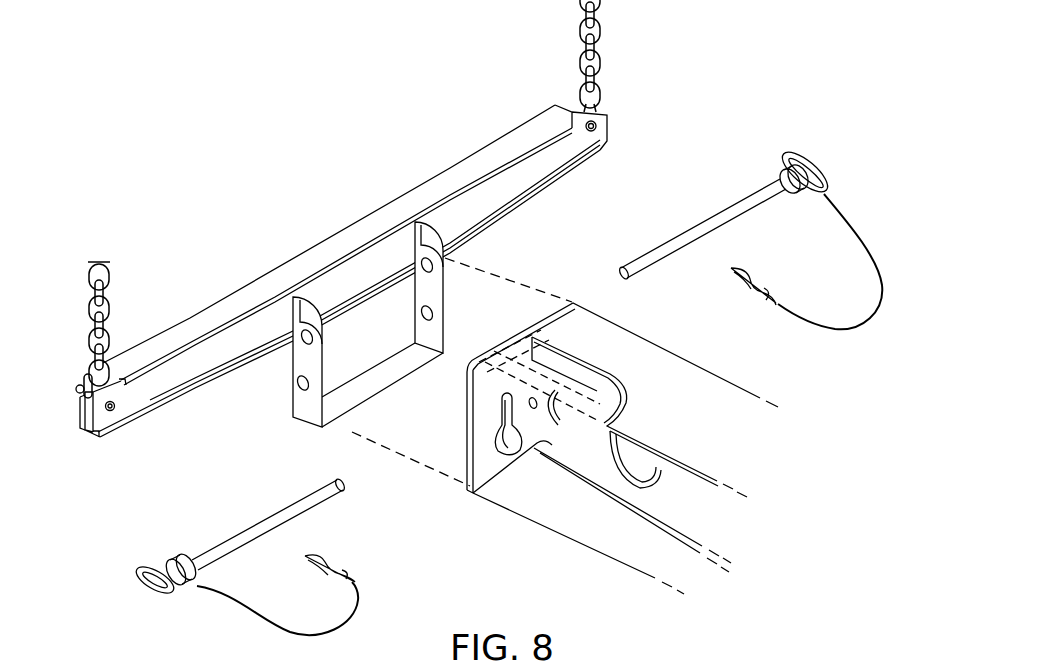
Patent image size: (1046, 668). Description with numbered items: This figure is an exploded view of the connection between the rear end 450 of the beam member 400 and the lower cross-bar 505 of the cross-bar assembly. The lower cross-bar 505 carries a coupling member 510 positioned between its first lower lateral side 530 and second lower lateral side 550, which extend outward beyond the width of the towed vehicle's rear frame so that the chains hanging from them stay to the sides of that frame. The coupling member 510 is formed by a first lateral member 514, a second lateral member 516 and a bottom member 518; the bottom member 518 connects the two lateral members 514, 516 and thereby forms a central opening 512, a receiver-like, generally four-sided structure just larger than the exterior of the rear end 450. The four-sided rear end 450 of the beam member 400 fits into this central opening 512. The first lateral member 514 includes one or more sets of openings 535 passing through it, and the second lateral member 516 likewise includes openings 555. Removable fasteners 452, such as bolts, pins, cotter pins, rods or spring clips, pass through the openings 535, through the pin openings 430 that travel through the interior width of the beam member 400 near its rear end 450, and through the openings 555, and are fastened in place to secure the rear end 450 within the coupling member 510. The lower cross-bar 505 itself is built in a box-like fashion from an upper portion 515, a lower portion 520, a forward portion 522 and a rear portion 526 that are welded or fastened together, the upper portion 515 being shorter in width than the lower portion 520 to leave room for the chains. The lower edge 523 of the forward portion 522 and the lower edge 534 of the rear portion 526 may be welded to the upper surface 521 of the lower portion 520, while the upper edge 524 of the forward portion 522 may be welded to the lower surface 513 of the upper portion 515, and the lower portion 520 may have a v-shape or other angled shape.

The beam member 400 is at (645, 448).
The pin openings 430 is at (543, 372).
The rear end 450 is at (490, 470).
The removable fasteners 452 is at (746, 203).
The lower cross-bar 505 is at (490, 187).
The coupling member 510 is at (411, 317).
The central opening 512 is at (398, 332).
The lower surface 513 is at (477, 205).
The first lateral member 514 is at (296, 367).
The upper portion 515 is at (410, 197).
The second lateral member 516 is at (438, 270).
The bottom member 518 is at (357, 400).
The lower portion 520 is at (147, 421).
The upper surface 521 is at (97, 442).
The forward portion 522 is at (212, 356).
The lower edge 523 is at (152, 400).
The upper edge 524 is at (606, 117).
The rear portion 526 is at (79, 399).
The first lower lateral side 530 is at (170, 385).
The lower edge 534 is at (80, 425).
The openings 535 is at (305, 335).
The second lower lateral side 550 is at (536, 170).
The openings 555 is at (420, 270).